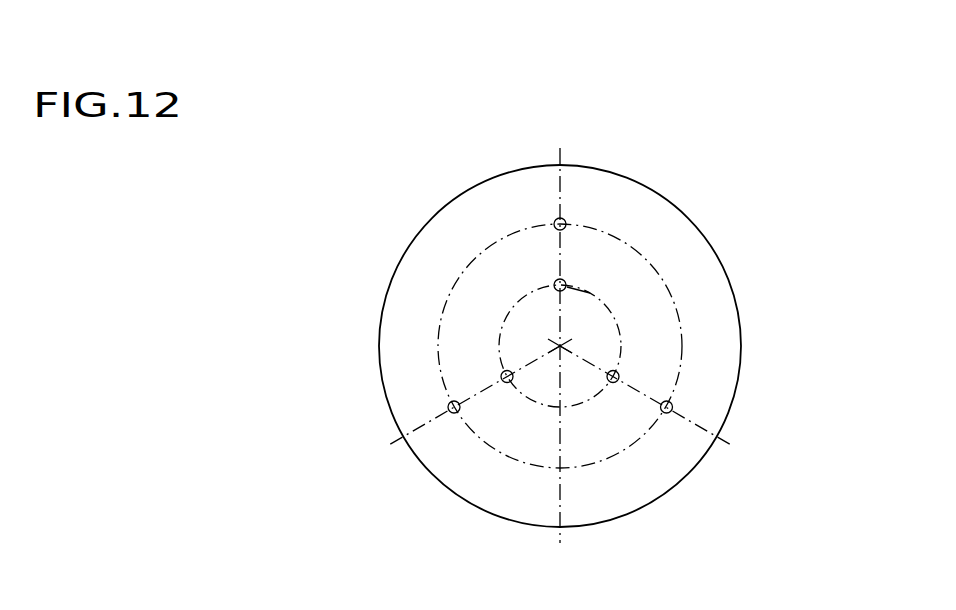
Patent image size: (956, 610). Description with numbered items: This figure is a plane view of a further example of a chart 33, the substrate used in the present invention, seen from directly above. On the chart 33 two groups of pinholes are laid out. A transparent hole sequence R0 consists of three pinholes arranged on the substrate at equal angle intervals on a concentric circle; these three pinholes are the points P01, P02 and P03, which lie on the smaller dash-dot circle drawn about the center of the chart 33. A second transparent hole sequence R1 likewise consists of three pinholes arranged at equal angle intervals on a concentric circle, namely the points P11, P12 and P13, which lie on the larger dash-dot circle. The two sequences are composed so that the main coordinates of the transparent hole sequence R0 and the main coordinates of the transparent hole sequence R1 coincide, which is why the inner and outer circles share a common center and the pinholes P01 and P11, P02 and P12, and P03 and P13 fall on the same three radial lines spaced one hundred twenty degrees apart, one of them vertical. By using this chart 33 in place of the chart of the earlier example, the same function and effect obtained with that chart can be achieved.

The chart 33 is at (528, 190).
The transparent hole sequence R1 is at (680, 377).
The transparent hole sequence R0 is at (590, 293).
The outer measurement point P11 is at (565, 222).
The inner measurement point P01 is at (565, 281).
The inner measurement point P02 is at (614, 382).
The outer measurement point P12 is at (668, 413).
The inner measurement point P03 is at (501, 378).
The outer measurement point P13 is at (449, 410).